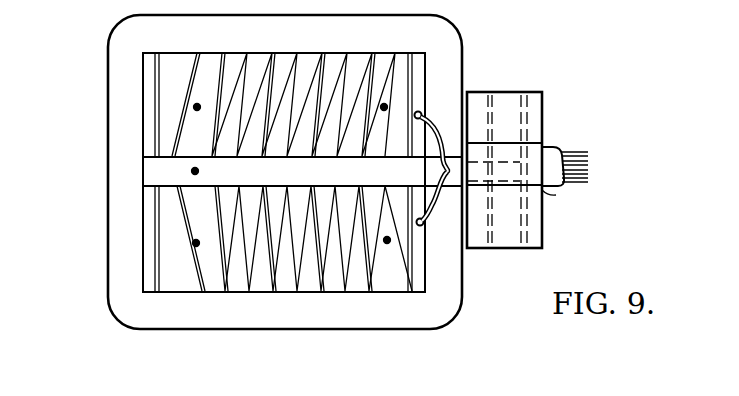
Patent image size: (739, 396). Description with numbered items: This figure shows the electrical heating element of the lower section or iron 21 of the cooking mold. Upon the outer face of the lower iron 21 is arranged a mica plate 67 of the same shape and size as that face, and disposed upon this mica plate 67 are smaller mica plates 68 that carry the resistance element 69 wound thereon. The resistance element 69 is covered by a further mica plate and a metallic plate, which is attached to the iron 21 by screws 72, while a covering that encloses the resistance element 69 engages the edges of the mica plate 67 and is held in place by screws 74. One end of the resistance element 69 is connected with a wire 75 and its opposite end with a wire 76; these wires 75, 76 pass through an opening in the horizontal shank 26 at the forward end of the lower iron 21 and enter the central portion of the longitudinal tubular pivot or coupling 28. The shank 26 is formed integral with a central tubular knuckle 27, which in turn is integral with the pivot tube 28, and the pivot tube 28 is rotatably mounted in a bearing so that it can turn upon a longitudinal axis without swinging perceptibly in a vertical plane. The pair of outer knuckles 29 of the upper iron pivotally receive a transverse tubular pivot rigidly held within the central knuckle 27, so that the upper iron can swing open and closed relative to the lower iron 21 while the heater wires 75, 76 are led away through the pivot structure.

The lower section or iron 21 is at (108, 244).
The horizontal shank 26 is at (556, 195).
The central tubular knuckle 27 is at (504, 164).
The pivot tube 28 is at (547, 162).
The outer knuckles 29 is at (542, 100).
The mica plate 67 is at (116, 80).
The smaller mica plates 68 is at (417, 57).
The resistance element 69 is at (407, 78).
The screws 72 is at (198, 246).
The screws 74 is at (191, 171).
The wire 75 is at (440, 133).
The wire 76 is at (440, 205).